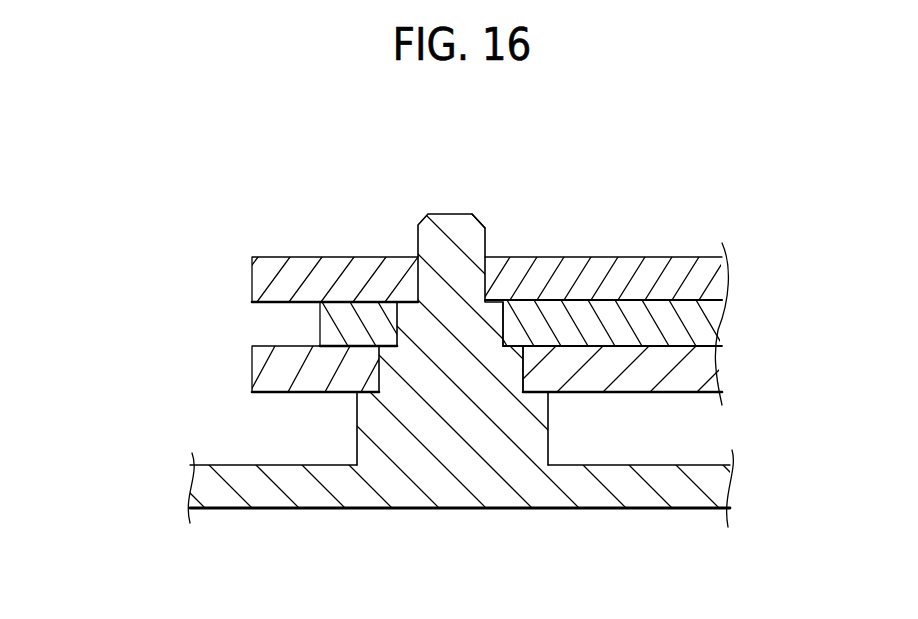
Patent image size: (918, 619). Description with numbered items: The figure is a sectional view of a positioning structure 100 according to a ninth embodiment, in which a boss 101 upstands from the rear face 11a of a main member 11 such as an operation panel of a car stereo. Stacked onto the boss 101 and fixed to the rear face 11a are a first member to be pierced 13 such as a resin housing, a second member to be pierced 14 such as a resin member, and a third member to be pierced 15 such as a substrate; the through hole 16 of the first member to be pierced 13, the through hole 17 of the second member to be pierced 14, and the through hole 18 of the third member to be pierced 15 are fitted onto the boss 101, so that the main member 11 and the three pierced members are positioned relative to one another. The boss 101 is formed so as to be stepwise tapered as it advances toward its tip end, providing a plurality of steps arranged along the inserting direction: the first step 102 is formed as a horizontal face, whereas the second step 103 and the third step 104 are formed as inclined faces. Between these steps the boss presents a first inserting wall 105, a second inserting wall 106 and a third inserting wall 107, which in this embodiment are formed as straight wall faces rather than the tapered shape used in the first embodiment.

The main member 11 is at (280, 496).
The rear face 11a is at (679, 465).
The first member to be pierced 13 is at (273, 372).
The second member to be pierced 14 is at (335, 326).
The third member to be pierced 15 is at (273, 277).
The through hole 16 is at (522, 374).
The through hole 17 is at (503, 332).
The through hole 18 is at (486, 272).
The positioning structure 100 is at (538, 176).
The boss 101 is at (424, 196).
The first step 102 is at (532, 392).
The second step 103 is at (508, 330).
The third step 104 is at (498, 300).
The first inserting wall 105 is at (377, 392).
The second inserting wall 106 is at (370, 307).
The third inserting wall 107 is at (418, 282).